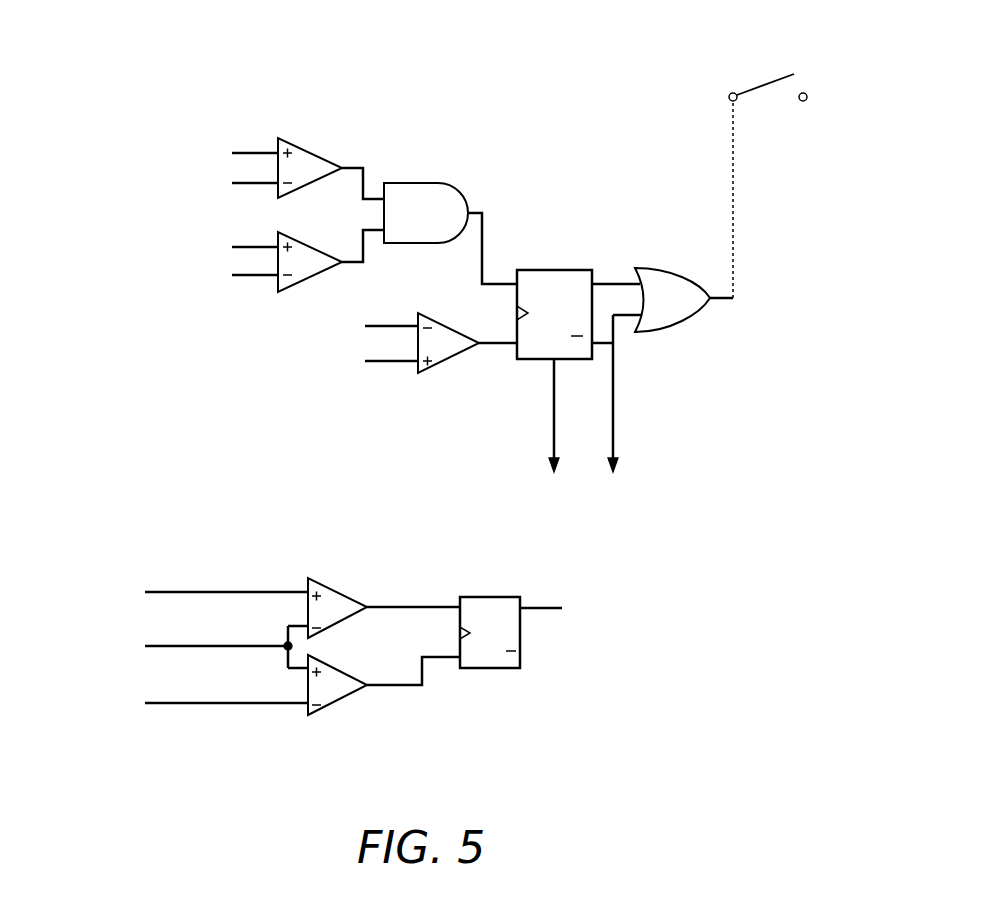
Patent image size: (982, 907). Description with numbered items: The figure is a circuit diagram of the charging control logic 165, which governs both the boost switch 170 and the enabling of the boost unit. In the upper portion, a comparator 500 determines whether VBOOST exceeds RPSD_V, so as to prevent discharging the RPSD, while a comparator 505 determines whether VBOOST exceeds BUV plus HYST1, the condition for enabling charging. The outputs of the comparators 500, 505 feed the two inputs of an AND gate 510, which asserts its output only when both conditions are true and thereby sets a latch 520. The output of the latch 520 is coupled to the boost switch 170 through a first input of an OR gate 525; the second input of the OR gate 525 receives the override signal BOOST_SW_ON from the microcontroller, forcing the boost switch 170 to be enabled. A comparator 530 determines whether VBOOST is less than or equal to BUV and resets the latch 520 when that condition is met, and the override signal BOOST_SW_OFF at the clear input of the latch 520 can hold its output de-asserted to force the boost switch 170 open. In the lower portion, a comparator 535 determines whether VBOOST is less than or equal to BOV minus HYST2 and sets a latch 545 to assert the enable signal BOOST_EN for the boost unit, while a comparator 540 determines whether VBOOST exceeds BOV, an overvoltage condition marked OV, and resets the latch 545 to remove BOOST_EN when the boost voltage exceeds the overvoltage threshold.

The charging control logic 165 is at (853, 747).
The boost switch 170 is at (730, 93).
The comparator 500 is at (312, 148).
The comparator 505 is at (312, 240).
The AND gate 510 is at (432, 182).
The latch 520 is at (552, 268).
The OR gate 525 is at (643, 267).
The comparator 530 is at (450, 325).
The comparator 535 is at (340, 588).
The comparator 540 is at (340, 665).
The latch 545 is at (490, 595).